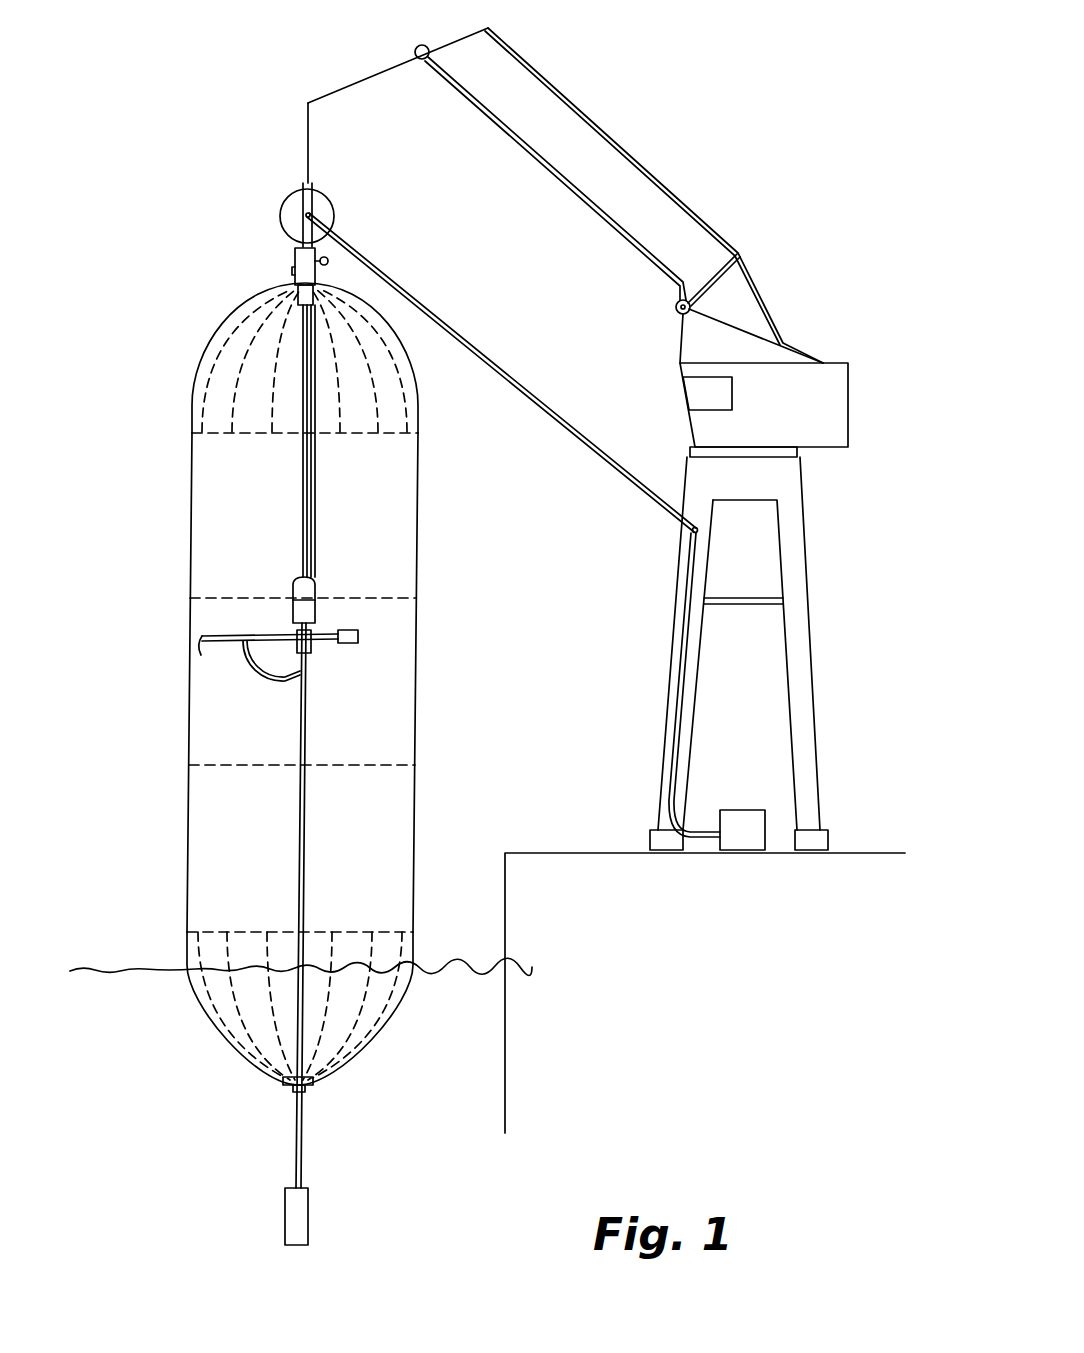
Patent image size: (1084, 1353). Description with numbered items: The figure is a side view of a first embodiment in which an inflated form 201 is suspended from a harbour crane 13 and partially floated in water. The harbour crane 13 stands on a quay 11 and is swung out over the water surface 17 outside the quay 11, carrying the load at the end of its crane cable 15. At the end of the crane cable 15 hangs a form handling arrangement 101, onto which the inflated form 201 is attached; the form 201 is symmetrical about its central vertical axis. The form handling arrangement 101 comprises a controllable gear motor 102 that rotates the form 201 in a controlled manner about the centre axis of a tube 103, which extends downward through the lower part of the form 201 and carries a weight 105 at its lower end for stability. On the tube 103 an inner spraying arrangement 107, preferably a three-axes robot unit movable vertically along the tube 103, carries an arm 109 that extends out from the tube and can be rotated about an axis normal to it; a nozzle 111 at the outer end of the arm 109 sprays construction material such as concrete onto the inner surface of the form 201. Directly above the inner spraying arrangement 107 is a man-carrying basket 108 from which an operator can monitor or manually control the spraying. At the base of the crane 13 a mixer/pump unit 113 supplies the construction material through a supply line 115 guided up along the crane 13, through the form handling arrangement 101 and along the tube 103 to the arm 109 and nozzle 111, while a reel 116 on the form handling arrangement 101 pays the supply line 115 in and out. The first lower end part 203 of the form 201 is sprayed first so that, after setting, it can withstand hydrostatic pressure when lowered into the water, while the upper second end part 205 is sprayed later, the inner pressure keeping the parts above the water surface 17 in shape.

The quay 11 is at (560, 904).
The harbour crane 13 is at (795, 372).
The crane cable 15 is at (305, 148).
The water surface 17 is at (142, 968).
The form handling arrangement 101 is at (303, 263).
The controllable gear motor 102 is at (330, 257).
The tube 103 is at (302, 745).
The weight 105 is at (298, 1218).
The inner spraying arrangement 107 is at (290, 630).
The man-carrying basket 108 is at (293, 610).
The arm 109 is at (292, 637).
The nozzle 111 is at (200, 645).
The mixer/pump unit 113 is at (748, 823).
The supply line 115 is at (558, 420).
The reel 116 is at (283, 204).
The inflated form 201 is at (202, 462).
The first lower end part 203 is at (227, 1022).
The upper second end part 205 is at (222, 335).